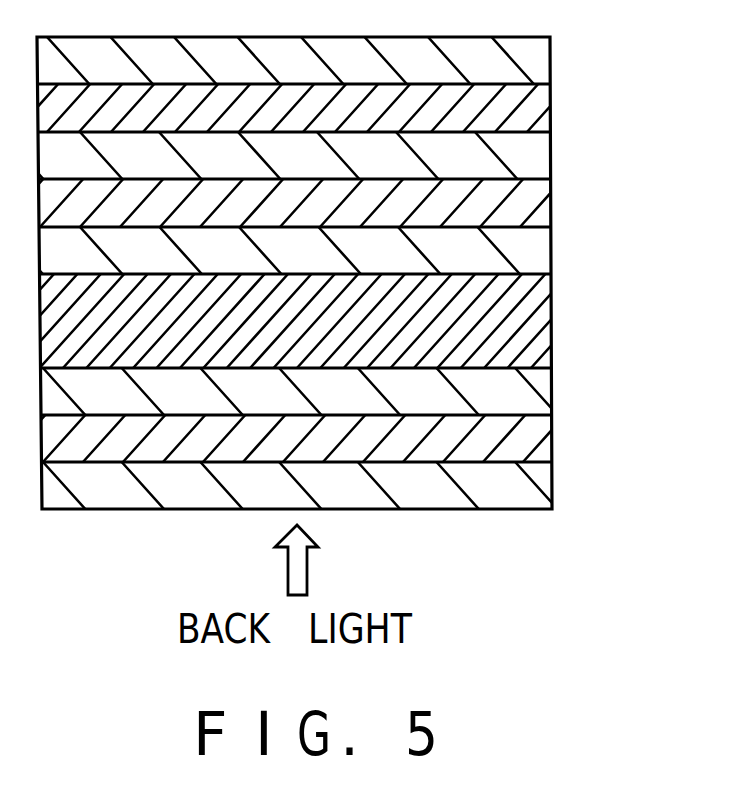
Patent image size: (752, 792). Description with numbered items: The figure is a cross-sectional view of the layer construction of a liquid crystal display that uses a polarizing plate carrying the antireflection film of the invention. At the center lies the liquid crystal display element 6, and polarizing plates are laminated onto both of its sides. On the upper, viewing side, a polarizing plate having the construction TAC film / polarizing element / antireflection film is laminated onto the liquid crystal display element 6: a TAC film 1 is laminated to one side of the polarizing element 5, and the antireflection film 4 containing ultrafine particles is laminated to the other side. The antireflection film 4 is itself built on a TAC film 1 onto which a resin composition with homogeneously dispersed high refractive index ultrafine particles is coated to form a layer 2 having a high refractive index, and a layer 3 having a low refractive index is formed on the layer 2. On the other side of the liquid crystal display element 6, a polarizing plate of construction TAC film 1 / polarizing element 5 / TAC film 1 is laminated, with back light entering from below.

The TAC film 1 is at (550, 153).
The layer having a high refractive index 2 is at (551, 107).
The layer having a low refractive index 3 is at (551, 53).
The antireflection film containing ultrafine particles 4 is at (657, 13).
The polarizing element 5 is at (552, 205).
The liquid crystal display element 6 is at (552, 315).